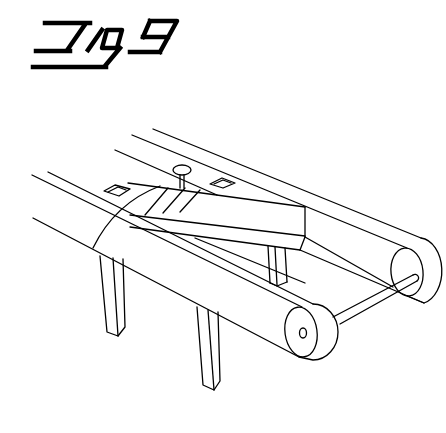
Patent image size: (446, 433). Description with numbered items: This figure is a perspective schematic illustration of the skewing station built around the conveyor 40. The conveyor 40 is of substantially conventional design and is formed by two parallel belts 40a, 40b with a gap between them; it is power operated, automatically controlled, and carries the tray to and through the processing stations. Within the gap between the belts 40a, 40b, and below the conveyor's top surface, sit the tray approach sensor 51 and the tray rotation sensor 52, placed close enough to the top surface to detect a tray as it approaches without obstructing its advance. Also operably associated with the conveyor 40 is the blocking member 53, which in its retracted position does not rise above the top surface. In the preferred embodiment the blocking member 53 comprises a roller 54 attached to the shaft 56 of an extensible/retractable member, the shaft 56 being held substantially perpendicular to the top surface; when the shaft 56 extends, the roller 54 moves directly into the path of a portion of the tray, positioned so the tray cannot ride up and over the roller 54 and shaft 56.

The conveyor 40 is at (237, 201).
The belt 40a is at (192, 301).
The belt 40b is at (368, 218).
The tray approach sensor 51 is at (232, 178).
The tray rotation sensor 52 is at (110, 186).
The blocking member 53 is at (183, 165).
The roller 54 is at (189, 177).
The shaft 56 is at (93, 248).